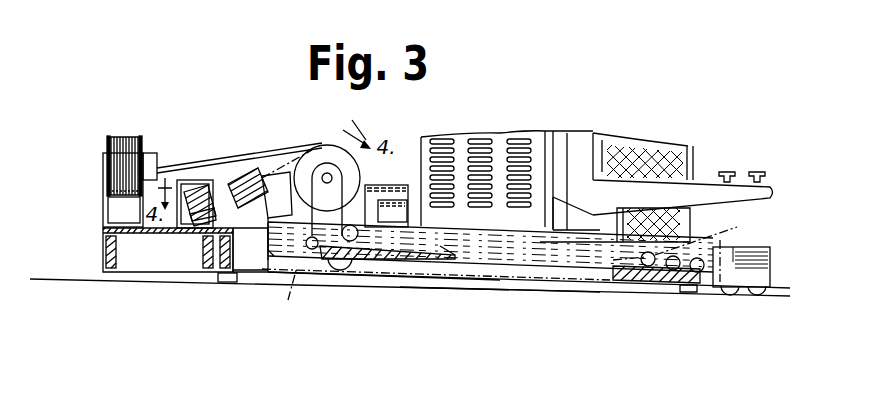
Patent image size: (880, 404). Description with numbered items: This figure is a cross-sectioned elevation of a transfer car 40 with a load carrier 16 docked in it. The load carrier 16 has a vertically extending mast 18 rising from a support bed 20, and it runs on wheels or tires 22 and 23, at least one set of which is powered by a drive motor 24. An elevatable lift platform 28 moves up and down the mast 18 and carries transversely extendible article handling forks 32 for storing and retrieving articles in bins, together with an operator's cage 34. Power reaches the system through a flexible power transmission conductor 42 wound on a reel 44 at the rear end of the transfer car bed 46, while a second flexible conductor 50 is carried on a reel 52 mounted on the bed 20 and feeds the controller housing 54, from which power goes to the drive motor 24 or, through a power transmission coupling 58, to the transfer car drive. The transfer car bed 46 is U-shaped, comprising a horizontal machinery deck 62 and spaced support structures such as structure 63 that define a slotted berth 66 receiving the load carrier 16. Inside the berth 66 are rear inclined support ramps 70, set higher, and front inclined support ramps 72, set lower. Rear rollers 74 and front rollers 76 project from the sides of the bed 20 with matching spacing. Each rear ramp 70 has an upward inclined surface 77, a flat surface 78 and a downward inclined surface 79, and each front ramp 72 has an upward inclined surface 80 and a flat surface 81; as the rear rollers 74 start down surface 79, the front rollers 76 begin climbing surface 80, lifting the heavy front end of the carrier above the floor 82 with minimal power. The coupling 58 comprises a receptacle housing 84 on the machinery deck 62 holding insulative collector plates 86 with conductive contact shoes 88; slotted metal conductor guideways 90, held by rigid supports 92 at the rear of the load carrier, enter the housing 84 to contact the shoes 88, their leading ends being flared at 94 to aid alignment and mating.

The load carrier 16 is at (552, 108).
The mast 18 is at (552, 215).
The support bed 20 is at (755, 250).
The wheels or tires 22 is at (343, 268).
The wheels or tires 23 is at (766, 289).
The drive motor 24 is at (392, 193).
The lift platform 28 is at (661, 173).
The article handling forks 32 is at (758, 171).
The operator's cage 34 is at (628, 147).
The transfer car 40 is at (254, 290).
The flexible power transmission conductor 42 is at (128, 140).
The reel 44 is at (146, 140).
The transfer car bed 46 is at (103, 252).
The flexible power transmission conductor 50 is at (236, 165).
The reel 52 is at (324, 145).
The controller housing 54 is at (462, 147).
The power transmission coupling 58 is at (241, 167).
The machinery deck 62 is at (153, 235).
The support structure 63 is at (427, 273).
The slotted berth 66 is at (271, 276).
The rear inclined support ramps 70 is at (392, 259).
The front inclined support ramps 72 is at (632, 281).
The rear rollers 74 is at (328, 247).
The front rollers 76 is at (714, 262).
The upward inclined surface 77 is at (413, 248).
The flat surface 78 is at (374, 211).
The downward inclined surface 79 is at (338, 246).
The upward inclined surface 80 is at (672, 271).
The flat surface 81 is at (640, 259).
The floor 82 is at (496, 284).
The receptacle housing 84 is at (188, 180).
The insulative collector plates 86 is at (193, 195).
The conductive contact shoes 88 is at (194, 219).
The slotted metal conductor guideways 90 is at (250, 164).
The rigid supports 92 is at (239, 207).
The flared end 94 is at (232, 226).